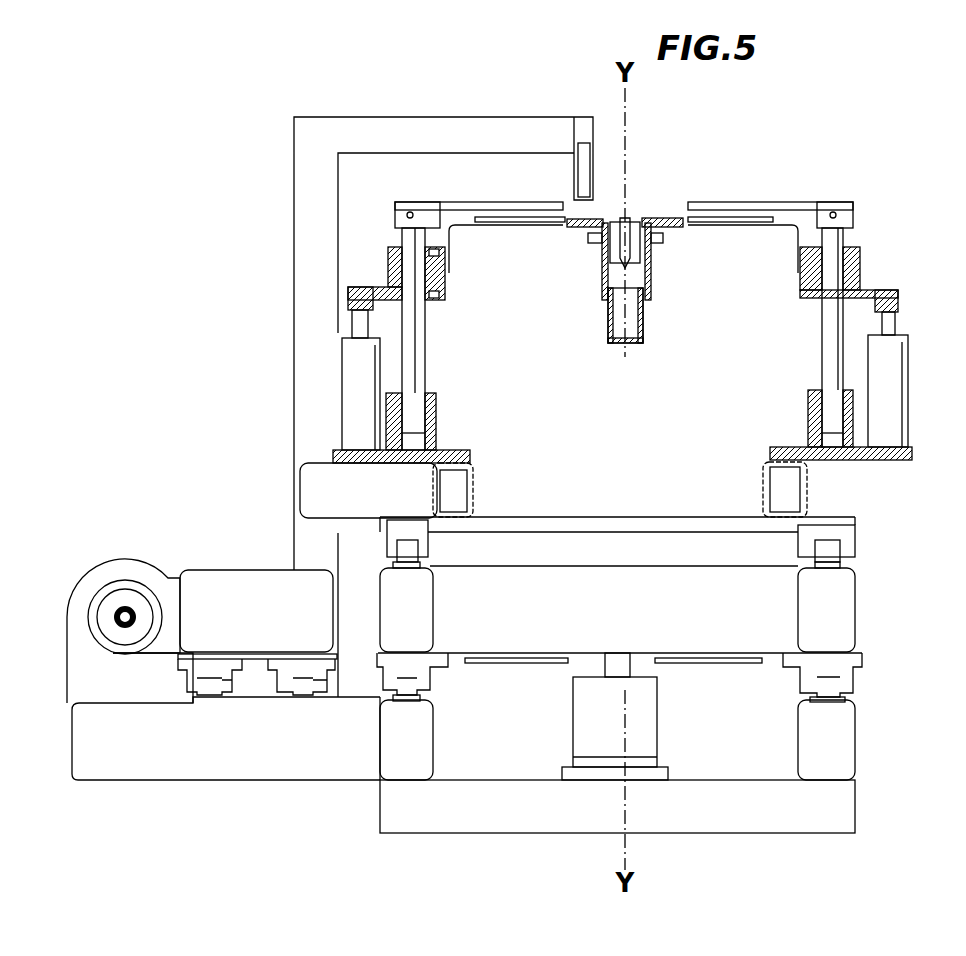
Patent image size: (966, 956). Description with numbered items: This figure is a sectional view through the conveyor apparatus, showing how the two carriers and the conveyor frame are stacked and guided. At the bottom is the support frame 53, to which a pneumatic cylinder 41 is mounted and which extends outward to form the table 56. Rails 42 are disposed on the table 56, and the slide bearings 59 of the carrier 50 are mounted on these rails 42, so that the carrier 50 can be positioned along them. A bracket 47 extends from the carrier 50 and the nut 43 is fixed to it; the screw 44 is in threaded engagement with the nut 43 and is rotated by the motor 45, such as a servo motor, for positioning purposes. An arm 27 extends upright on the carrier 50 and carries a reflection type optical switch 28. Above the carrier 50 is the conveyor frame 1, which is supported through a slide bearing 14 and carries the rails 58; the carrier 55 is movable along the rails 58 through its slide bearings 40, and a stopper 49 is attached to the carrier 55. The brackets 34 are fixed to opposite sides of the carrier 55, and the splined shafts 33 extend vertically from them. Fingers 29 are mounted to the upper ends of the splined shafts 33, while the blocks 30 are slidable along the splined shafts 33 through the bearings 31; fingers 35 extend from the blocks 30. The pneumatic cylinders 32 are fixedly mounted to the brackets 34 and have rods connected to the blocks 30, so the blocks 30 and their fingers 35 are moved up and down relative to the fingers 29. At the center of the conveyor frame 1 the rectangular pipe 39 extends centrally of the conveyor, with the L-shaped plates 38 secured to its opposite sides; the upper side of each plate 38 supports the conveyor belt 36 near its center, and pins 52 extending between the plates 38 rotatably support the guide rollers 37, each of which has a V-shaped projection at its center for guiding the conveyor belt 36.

The conveyor frame 1 is at (857, 620).
The slide bearing 14 is at (430, 680).
The arm 27 is at (490, 117).
The reflection type optical switch 28 is at (580, 165).
The fingers 29 is at (520, 202).
The blocks 30 is at (445, 297).
The bearings 31 is at (446, 275).
The pneumatic cylinders 32 is at (340, 378).
The splined shafts 33 is at (428, 355).
The brackets 34 is at (436, 420).
The fingers 35 is at (545, 224).
The conveyor belt 36 is at (592, 218).
The guide rollers 37 is at (632, 252).
The plates 38 is at (651, 292).
The rectangular pipe 39 is at (643, 323).
The slide bearings 40 is at (433, 548).
The pneumatic cylinder 41 is at (652, 745).
The rails 42 is at (210, 694).
The nut 43 is at (110, 637).
The screw 44 is at (130, 617).
The motor 45 is at (88, 540).
The bracket 47 is at (153, 652).
The stopper 49 is at (312, 502).
The carrier 50 is at (215, 577).
The pins 52 is at (588, 240).
The support frame 53 is at (850, 752).
The carrier 55 is at (567, 517).
The table 56 is at (135, 760).
The rails 58 is at (836, 558).
The slide bearings 59 is at (229, 682).